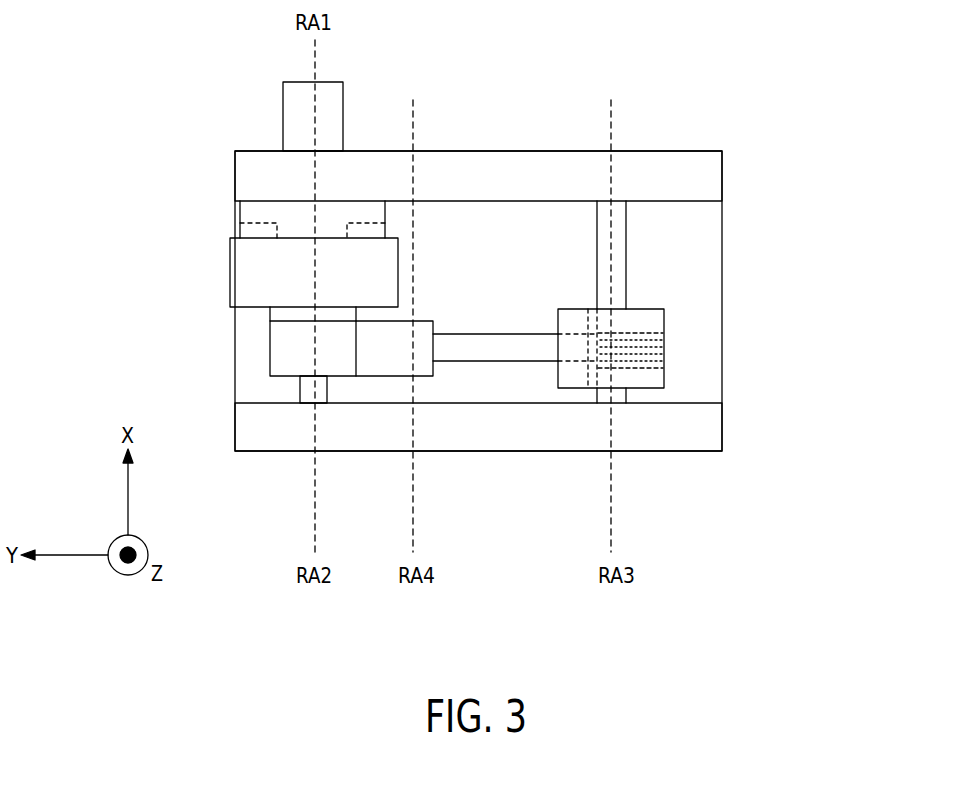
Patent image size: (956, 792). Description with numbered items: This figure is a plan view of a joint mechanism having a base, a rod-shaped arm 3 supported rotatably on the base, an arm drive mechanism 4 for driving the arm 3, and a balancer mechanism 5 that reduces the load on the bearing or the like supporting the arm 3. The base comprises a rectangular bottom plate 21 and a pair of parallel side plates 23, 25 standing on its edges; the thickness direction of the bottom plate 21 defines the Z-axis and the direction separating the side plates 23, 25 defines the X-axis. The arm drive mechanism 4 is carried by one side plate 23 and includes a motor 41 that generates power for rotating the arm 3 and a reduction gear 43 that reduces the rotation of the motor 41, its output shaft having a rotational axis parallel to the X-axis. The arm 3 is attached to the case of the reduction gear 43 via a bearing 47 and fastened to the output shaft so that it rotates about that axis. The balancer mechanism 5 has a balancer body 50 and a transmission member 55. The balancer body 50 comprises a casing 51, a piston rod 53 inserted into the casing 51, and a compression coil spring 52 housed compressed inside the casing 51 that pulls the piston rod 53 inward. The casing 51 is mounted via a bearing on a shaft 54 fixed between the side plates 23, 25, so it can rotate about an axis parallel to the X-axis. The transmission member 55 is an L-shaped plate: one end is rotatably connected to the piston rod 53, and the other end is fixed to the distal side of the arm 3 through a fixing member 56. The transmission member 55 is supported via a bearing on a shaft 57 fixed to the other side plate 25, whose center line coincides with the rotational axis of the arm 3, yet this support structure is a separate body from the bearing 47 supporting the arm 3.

The arm 3 is at (252, 290).
The arm drive mechanism 4 is at (236, 160).
The balancer mechanism 5 is at (621, 286).
The bottom plate 21 is at (711, 223).
The side plate 23 is at (682, 173).
The side plate 25 is at (682, 422).
The motor 41 is at (293, 102).
The reduction gear 43 is at (252, 210).
The bearing 47 is at (261, 222).
The balancer body 50 is at (624, 361).
The casing 51 is at (663, 322).
The compression coil spring 52 is at (664, 345).
The piston rod 53 is at (510, 349).
The shaft 54 is at (619, 265).
The transmission member 55 is at (281, 355).
The fixing member 56 is at (281, 313).
The shaft 57 is at (327, 392).